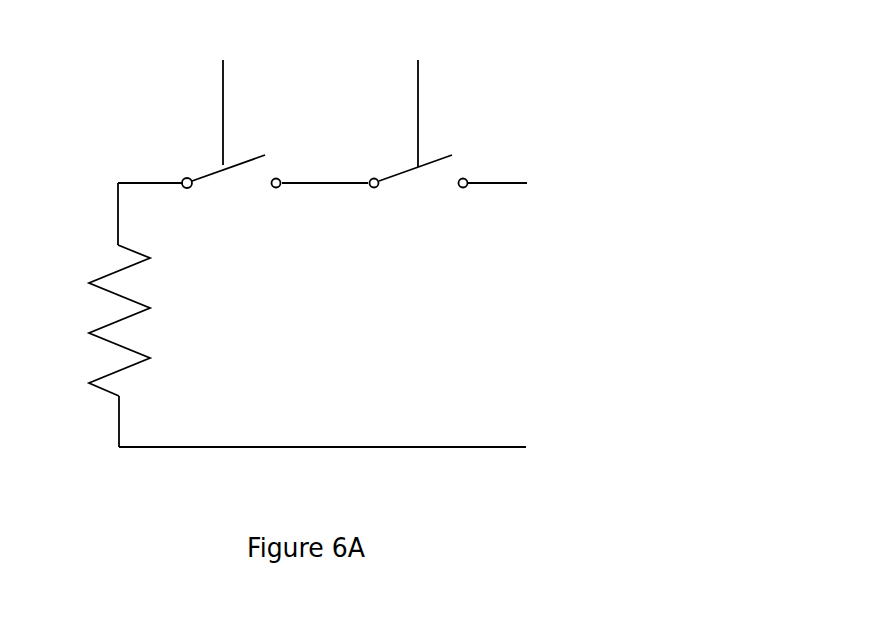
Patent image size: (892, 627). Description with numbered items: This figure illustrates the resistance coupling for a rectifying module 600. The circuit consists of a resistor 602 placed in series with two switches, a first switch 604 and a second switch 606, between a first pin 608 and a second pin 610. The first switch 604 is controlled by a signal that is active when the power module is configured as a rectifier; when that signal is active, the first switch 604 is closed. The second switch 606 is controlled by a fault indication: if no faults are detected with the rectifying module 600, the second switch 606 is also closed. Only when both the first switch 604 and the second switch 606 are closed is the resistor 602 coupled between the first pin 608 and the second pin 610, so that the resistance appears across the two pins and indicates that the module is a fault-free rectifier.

The rectifying module 600 is at (613, 202).
The resistor 602 is at (135, 298).
The switch 604 is at (192, 167).
The switch 606 is at (383, 203).
The pin 608 is at (497, 183).
The pin 610 is at (518, 425).